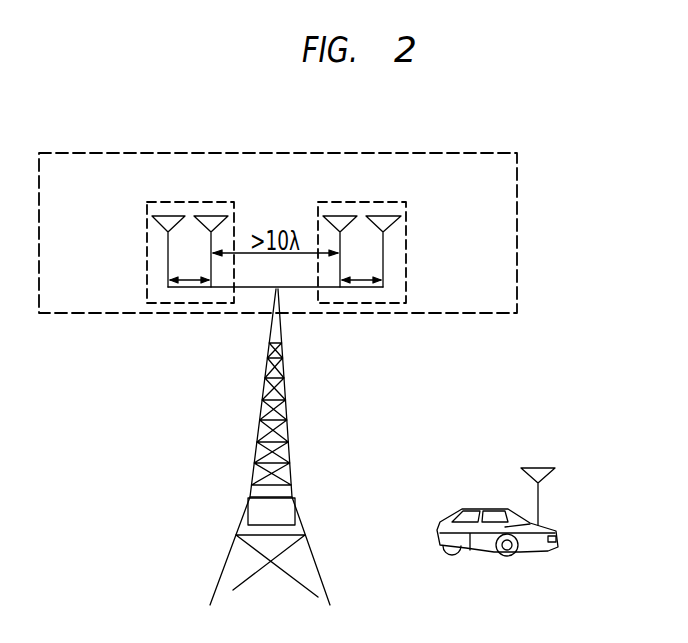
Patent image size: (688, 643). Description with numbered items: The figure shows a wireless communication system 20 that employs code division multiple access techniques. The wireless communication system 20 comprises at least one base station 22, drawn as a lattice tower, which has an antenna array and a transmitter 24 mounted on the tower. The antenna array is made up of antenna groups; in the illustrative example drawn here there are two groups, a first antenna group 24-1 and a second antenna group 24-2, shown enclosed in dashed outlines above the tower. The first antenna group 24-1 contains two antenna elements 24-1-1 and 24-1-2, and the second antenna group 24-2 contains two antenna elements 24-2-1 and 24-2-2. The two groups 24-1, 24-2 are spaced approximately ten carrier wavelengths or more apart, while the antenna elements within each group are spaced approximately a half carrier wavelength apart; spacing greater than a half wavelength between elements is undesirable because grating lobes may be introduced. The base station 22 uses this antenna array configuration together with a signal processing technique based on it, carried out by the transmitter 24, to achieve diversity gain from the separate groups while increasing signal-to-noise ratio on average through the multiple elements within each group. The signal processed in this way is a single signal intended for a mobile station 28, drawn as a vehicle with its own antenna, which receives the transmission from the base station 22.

The wireless communication system 20 is at (510, 387).
The base station 22 is at (281, 447).
The transmitter 24 is at (298, 512).
The first antenna group 24-1 is at (150, 230).
The first antenna element of first group 24-1-1 is at (153, 218).
The second antenna element of first group 24-1-2 is at (210, 216).
The second antenna group 24-2 is at (407, 229).
The first antenna element of second group 24-2-1 is at (338, 216).
The second antenna element of second group 24-2-2 is at (395, 222).
The mobile station 28 is at (475, 548).